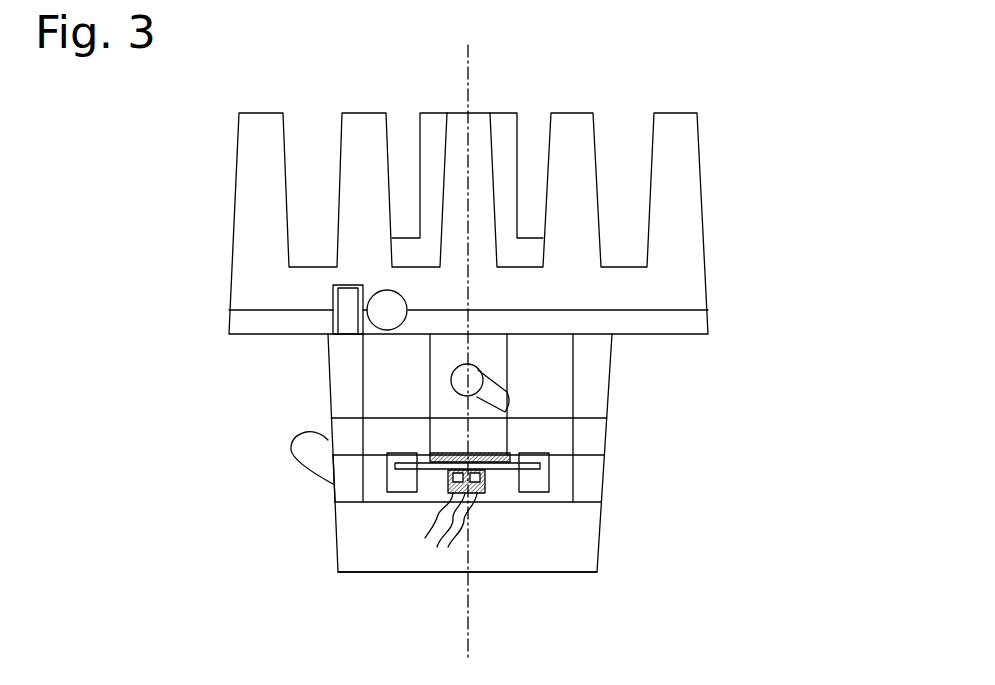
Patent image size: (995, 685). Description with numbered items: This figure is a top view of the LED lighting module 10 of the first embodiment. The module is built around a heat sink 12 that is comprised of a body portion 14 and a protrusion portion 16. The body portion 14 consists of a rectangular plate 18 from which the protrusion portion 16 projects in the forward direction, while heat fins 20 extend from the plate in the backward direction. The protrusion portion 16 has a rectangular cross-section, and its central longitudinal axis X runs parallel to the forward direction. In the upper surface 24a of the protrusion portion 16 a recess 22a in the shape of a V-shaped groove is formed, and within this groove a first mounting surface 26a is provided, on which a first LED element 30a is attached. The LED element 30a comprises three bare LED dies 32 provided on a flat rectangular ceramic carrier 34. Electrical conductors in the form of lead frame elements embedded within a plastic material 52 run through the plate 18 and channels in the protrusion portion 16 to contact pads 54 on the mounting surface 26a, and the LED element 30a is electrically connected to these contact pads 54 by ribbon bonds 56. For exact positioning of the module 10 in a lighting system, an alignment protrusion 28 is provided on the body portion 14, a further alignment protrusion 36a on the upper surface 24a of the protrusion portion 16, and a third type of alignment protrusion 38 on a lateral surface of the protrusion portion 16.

The LED lighting module 10 is at (745, 125).
The heat sink 12 is at (715, 395).
The body portion 14 is at (753, 257).
The protrusion portion 16 is at (598, 527).
The rectangular plate 18 is at (275, 320).
The heat fins 20 is at (570, 130).
The recess 22a is at (325, 488).
The upper surface 24a is at (553, 557).
The first mounting surface 26a is at (565, 480).
The alignment protrusion 28 is at (392, 307).
The first LED element 30a is at (448, 491).
The bare LED dies 32 is at (440, 535).
The ceramic carrier 34 is at (487, 493).
The alignment protrusion 36a is at (480, 366).
The alignment protrusion 38 is at (300, 433).
The plastic material 52 is at (388, 373).
The contact pads 54 is at (400, 485).
The ribbon bonds 56 is at (510, 457).
The central longitudinal axis x is at (475, 628).